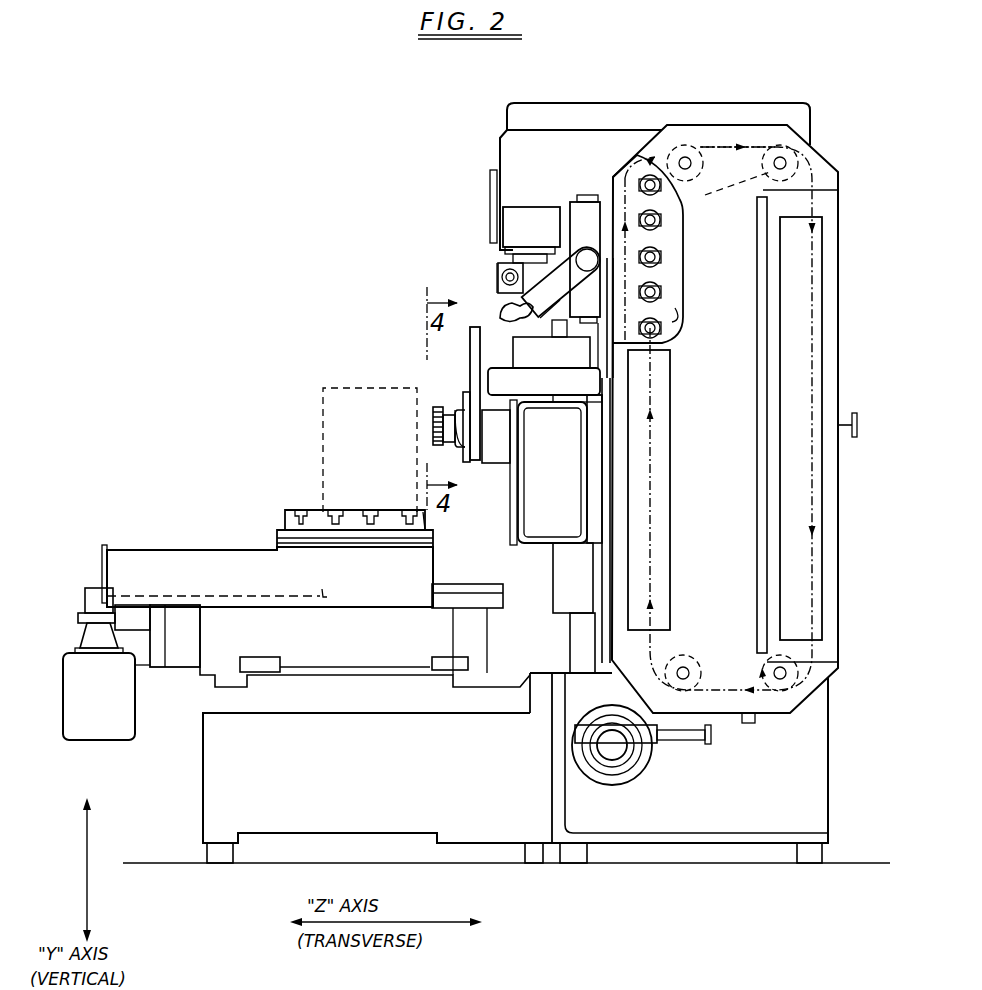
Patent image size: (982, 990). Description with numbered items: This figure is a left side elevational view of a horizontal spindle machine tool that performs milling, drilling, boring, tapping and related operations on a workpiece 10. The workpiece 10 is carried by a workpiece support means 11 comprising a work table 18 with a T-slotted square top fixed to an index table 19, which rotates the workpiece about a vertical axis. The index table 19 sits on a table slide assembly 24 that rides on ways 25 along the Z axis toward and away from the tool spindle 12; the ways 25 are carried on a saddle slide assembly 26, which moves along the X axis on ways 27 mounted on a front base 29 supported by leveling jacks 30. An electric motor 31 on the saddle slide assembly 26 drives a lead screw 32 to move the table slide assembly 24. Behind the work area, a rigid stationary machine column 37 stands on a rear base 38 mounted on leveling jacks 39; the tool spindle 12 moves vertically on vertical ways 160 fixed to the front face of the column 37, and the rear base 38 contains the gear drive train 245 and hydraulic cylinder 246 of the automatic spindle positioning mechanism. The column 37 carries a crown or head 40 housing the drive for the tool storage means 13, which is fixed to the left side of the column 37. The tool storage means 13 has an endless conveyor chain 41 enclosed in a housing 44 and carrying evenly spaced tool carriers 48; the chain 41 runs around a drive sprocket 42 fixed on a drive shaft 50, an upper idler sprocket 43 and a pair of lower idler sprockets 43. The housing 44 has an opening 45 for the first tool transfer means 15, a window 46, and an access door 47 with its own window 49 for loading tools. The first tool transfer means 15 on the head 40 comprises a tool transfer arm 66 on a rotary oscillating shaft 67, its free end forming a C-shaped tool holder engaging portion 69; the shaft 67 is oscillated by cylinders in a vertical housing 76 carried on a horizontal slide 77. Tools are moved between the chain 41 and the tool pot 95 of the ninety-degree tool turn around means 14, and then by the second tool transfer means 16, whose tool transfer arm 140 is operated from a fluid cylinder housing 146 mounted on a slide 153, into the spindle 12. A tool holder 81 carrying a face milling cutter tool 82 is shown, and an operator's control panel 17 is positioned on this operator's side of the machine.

The workpiece 10 is at (322, 438).
The workpiece support means 11 is at (288, 508).
The tool spindle 12 is at (432, 416).
The tool storage means 13 is at (838, 163).
The 90° tool turn around means 14 is at (495, 264).
The first tool transfer means 15 is at (522, 308).
The second tool transfer means 16 is at (468, 357).
The operator's control panel 17 is at (536, 513).
The work table 18 is at (424, 524).
The index table 19 is at (290, 534).
The table slide assembly 24 is at (293, 570).
The ways 25 is at (478, 587).
The saddle slide assembly 26 is at (480, 654).
The ways 27 is at (268, 660).
The front base 29 is at (218, 793).
The leveling jacks 30 is at (224, 856).
The electric motor 31 is at (73, 735).
The lead screw 32 is at (165, 594).
The machine column 37 is at (603, 664).
The rear base 38 is at (813, 818).
The leveling jacks 39 is at (574, 858).
The crown or head 40 is at (510, 151).
The endless conveyor chain 41 is at (663, 237).
The drive sprocket 42 is at (694, 171).
The idler sprockets 43 is at (745, 192).
The housing 44 is at (762, 133).
The opening 45 is at (678, 315).
The window 46 is at (662, 489).
The access door 47 is at (834, 394).
The tool carriers 48 is at (657, 260).
The window 49 is at (817, 578).
The drive shaft 50 is at (690, 158).
The tool transfer arm 66 is at (533, 338).
The rotary oscillating shaft 67 is at (580, 257).
The C-shaped tool holder engaging portion 69 is at (527, 301).
The vertical housing 76 is at (578, 218).
The horizontal slide 77 is at (591, 195).
The tool holder 81 is at (455, 446).
The face milling cutter tool 82 is at (431, 431).
The tool pot 95 is at (500, 280).
The tool transfer arm 140 is at (478, 369).
The fluid cylinder housing 146 is at (500, 458).
The slide 153 is at (533, 387).
The vertical ways 160 is at (560, 592).
The gear drive train 245 is at (627, 762).
The hydraulic cylinder 246 is at (685, 737).